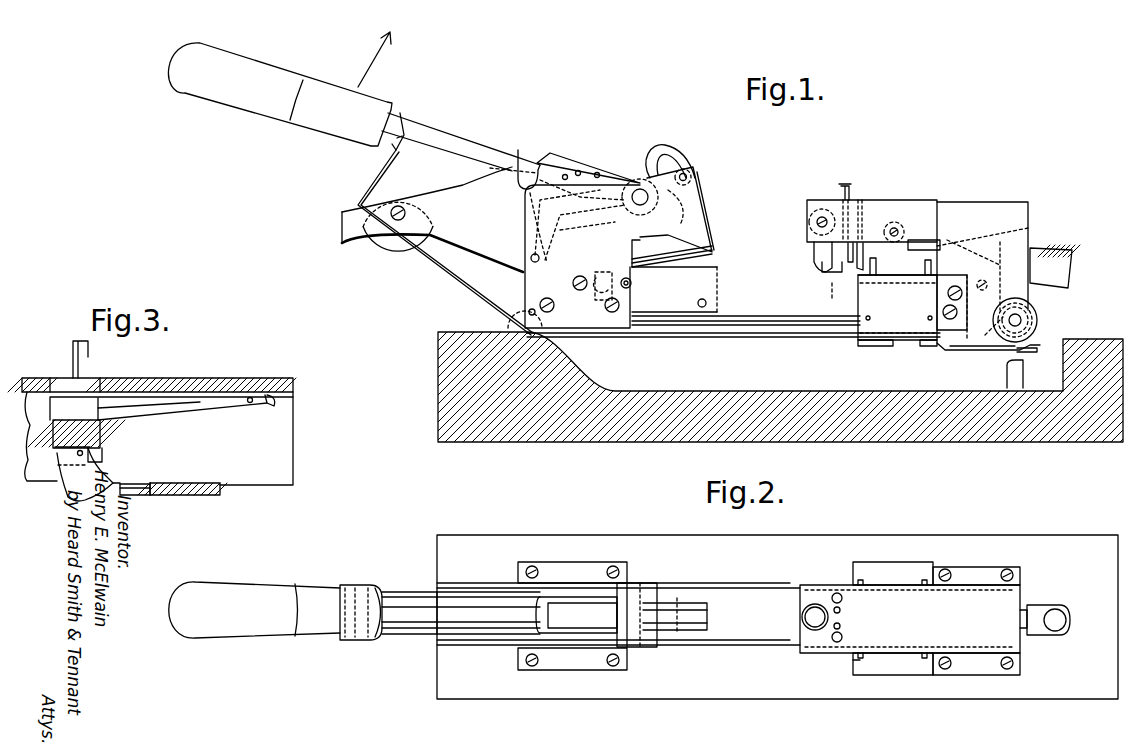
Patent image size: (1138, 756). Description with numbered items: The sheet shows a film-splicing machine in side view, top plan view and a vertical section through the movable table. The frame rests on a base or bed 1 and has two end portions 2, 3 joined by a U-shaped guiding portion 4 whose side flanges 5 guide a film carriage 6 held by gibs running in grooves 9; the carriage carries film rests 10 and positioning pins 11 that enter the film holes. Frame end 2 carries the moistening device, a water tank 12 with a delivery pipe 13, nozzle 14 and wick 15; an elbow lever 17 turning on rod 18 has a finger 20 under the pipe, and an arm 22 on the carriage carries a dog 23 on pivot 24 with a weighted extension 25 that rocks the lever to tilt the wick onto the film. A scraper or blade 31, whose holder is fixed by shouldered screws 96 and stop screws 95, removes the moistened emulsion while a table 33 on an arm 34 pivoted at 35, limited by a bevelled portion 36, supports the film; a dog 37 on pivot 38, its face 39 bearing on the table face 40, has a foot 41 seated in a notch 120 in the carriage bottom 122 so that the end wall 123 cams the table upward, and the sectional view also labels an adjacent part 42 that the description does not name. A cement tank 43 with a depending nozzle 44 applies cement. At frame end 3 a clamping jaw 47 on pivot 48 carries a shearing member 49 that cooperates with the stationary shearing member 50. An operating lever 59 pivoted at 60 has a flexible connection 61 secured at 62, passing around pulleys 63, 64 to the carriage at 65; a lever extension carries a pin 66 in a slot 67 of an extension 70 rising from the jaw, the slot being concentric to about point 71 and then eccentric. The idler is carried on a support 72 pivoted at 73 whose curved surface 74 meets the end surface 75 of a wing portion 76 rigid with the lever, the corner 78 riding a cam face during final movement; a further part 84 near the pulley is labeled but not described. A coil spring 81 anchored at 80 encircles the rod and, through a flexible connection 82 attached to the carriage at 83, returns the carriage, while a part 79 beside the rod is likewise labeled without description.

In FIG. 1, the base or bed 1 is at (1072, 439).
In FIG. 2, the base or bed 1 is at (1037, 546).
In FIG. 1, the end portion of frame 2 is at (1030, 206).
In FIG. 2, the end portion of frame 2 is at (1021, 585).
In FIG. 1, the end portion of frame 3 is at (524, 275).
In FIG. 2, the end portion of frame 3 is at (517, 580).
In FIG. 1, the guiding portion 4 is at (752, 276).
In FIG. 2, the guiding portion 4 is at (790, 647).
In FIG. 3, the guiding portion 4 is at (170, 380).
In FIG. 1, the side flanges 5 is at (775, 322).
In FIG. 3, the side flanges 5 is at (252, 470).
In FIG. 1, the film carriage 6 is at (882, 295).
In FIG. 2, the film carriage 6 is at (846, 660).
In FIG. 1, the grooves 9 is at (728, 326).
In FIG. 1, the flange or rest 10 is at (890, 287).
In FIG. 2, the flange or rest 10 is at (901, 562).
In FIG. 1, the positioning pins 11 is at (926, 265).
In FIG. 2, the positioning pins 11 is at (862, 579).
In FIG. 1, the tank 12 is at (1070, 264).
In FIG. 2, the tank 12 is at (1050, 636).
In FIG. 1, the delivery pipe 13 is at (948, 240).
In FIG. 1, the nozzle 14 is at (856, 244).
In FIG. 1, the wick 15 is at (861, 242).
In FIG. 1, the elbow lever 17 is at (1030, 230).
In FIG. 1, the rod 18 is at (1022, 322).
In FIG. 1, the finger 20 is at (910, 240).
In FIG. 1, the arm 22 is at (985, 351).
In FIG. 1, the dog 23 is at (1001, 351).
In FIG. 1, the pivot 24 is at (1034, 350).
In FIG. 1, the extension 25 is at (1024, 372).
In FIG. 1, the scraper or blade 31 is at (822, 267).
In FIG. 3, the scraper or blade 31 is at (72, 366).
In FIG. 1, the table 33 is at (832, 293).
In FIG. 3, the table 33 is at (100, 427).
In FIG. 3, the arm 34 is at (203, 405).
In FIG. 3, the pivot 35 is at (250, 404).
In FIG. 3, the bevelled upper portion 36 is at (274, 400).
In FIG. 3, the dog 37 is at (103, 457).
In FIG. 3, the pivot 38 is at (77, 453).
In FIG. 3, the face of dog 39 is at (60, 441).
In FIG. 3, the face of table 40 is at (58, 424).
In FIG. 3, the lower end or foot portion 41 is at (112, 486).
In FIG. 3, the cam piece 42 is at (63, 486).
In FIG. 1, the tank 43 is at (812, 211).
In FIG. 1, the nozzle 44 is at (815, 256).
In FIG. 1, the clamping jaw 47 is at (698, 233).
In FIG. 1, the pivot 48 is at (594, 297).
In FIG. 1, the shearing member 49 is at (710, 248).
In FIG. 2, the shearing member 49 is at (706, 630).
In FIG. 1, the shearing member 50 is at (713, 262).
In FIG. 2, the shearing member 50 is at (706, 606).
In FIG. 1, the operating lever 59 is at (437, 135).
In FIG. 2, the operating lever 59 is at (380, 605).
In FIG. 1, the pivot 60 is at (640, 189).
In FIG. 2, the pivot 60 is at (640, 600).
In FIG. 1, the flexible connection 61 is at (430, 284).
In FIG. 1, the securing point 62 is at (401, 122).
In FIG. 1, the guiding pulley or idler 63 is at (398, 245).
In FIG. 2, the guiding pulley or idler 63 is at (397, 630).
In FIG. 1, the guiding pulley 64 is at (522, 308).
In FIG. 1, the extension of lever / carriage connection point 65 is at (670, 178).
In FIG. 2, the extension of lever / carriage connection point 65 is at (661, 603).
In FIG. 1, the pin 66 is at (690, 173).
In FIG. 2, the pin 66 is at (679, 600).
In FIG. 1, the slot 67 is at (663, 150).
In FIG. 1, the extension 70 is at (697, 200).
In FIG. 1, the point 71 is at (698, 176).
In FIG. 1, the support 72 is at (478, 187).
In FIG. 2, the support 72 is at (411, 592).
In FIG. 1, the pivot 73 is at (531, 257).
In FIG. 1, the curved surface 74 is at (528, 140).
In FIG. 1, the end surface 75 is at (571, 177).
In FIG. 1, the wing portion 76 is at (585, 178).
In FIG. 2, the wing portion 76 is at (560, 590).
In FIG. 1, the corner 78 is at (553, 155).
In FIG. 1, the roller 79 is at (1035, 314).
In FIG. 1, the spring anchoring point 80 is at (982, 280).
In FIG. 1, the coil spring 81 is at (972, 278).
In FIG. 1, the flexible connection 82 is at (985, 335).
In FIG. 1, the connection point 83 is at (930, 347).
In FIG. 1, the pin 84 is at (633, 285).
In FIG. 2, the stop screws 95 is at (840, 626).
In FIG. 1, the shouldered screws 96 is at (847, 184).
In FIG. 2, the shouldered screws 96 is at (832, 637).
In FIG. 3, the notch 120 is at (132, 496).
In FIG. 3, the bottom of carriage 122 is at (201, 496).
In FIG. 3, the end wall 123 is at (160, 496).